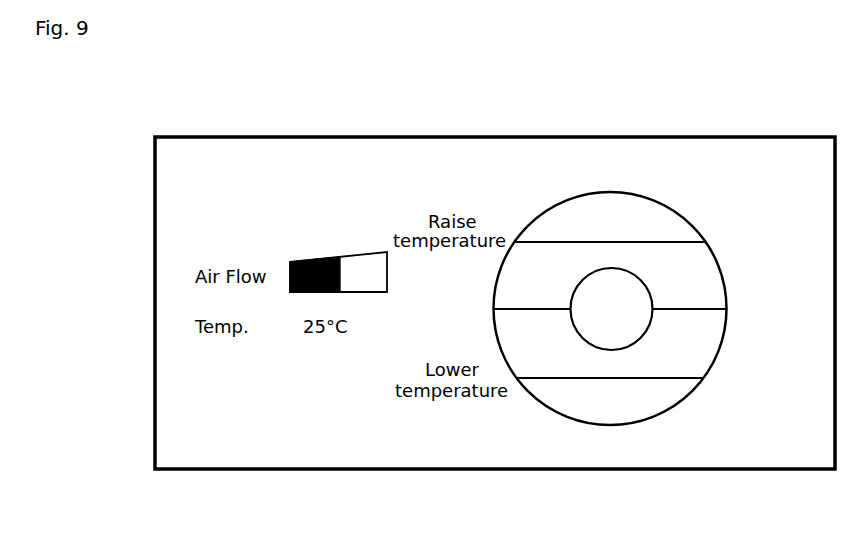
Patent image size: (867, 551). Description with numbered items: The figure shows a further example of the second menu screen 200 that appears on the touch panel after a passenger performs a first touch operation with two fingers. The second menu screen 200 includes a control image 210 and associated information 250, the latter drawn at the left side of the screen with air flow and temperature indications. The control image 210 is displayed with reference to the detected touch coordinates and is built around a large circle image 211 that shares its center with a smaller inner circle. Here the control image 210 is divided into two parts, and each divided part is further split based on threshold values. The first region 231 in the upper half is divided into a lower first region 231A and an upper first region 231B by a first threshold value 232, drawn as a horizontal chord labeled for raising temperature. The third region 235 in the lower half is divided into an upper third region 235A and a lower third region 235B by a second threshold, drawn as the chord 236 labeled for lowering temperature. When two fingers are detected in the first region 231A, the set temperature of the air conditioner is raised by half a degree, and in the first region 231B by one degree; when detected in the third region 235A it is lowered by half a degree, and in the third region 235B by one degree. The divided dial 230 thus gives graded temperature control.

The second menu screen 200 is at (260, 137).
The control image 210 is at (709, 159).
The associated information 250 is at (166, 302).
The dial user interface 230 is at (638, 342).
The large circle image 211 is at (595, 193).
The first region 231 is at (627, 195).
The lower first region 231A is at (705, 280).
The upper first region 231B is at (690, 226).
The first threshold value 232 is at (541, 240).
The third region 235 is at (586, 410).
The upper third region 235A is at (707, 346).
The lower third region 235B is at (670, 398).
The lower temperature area 236 is at (537, 380).